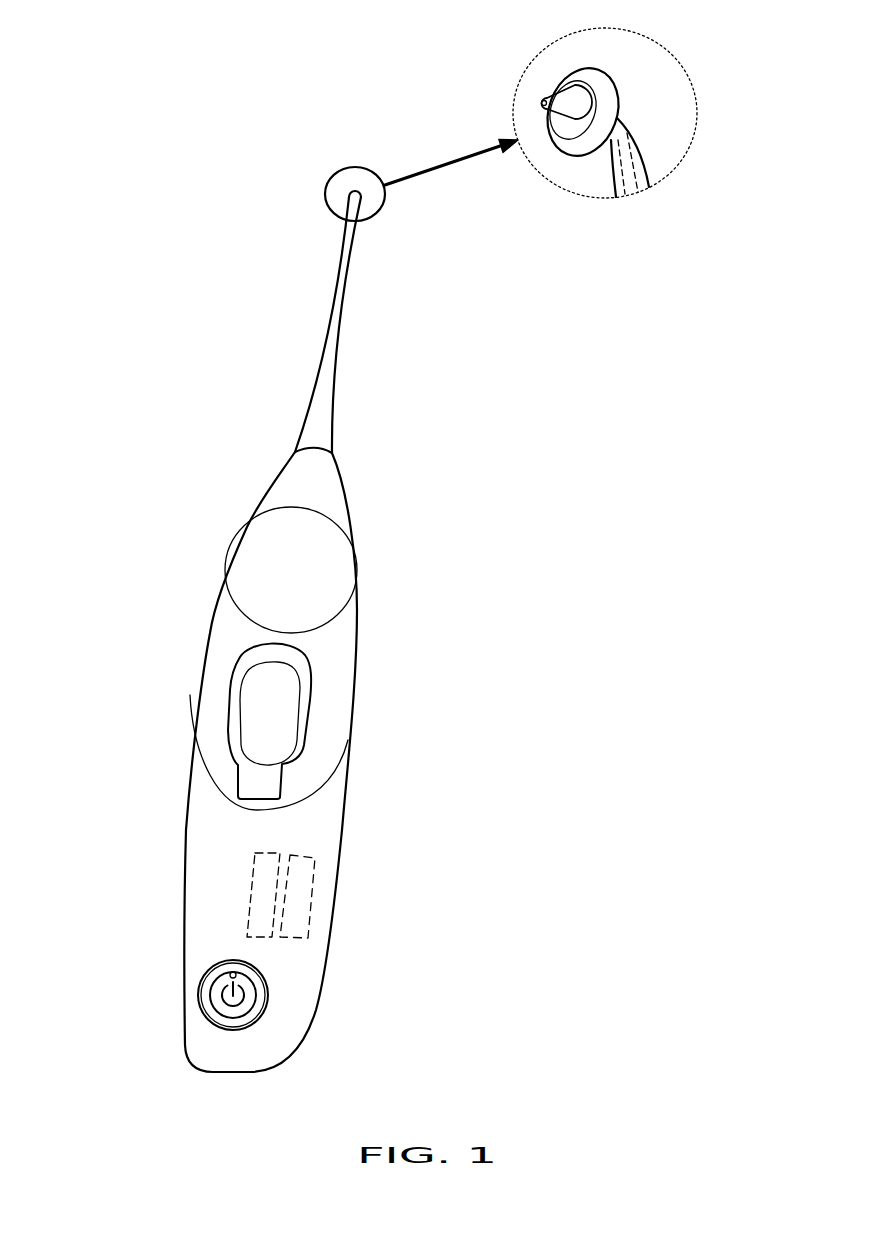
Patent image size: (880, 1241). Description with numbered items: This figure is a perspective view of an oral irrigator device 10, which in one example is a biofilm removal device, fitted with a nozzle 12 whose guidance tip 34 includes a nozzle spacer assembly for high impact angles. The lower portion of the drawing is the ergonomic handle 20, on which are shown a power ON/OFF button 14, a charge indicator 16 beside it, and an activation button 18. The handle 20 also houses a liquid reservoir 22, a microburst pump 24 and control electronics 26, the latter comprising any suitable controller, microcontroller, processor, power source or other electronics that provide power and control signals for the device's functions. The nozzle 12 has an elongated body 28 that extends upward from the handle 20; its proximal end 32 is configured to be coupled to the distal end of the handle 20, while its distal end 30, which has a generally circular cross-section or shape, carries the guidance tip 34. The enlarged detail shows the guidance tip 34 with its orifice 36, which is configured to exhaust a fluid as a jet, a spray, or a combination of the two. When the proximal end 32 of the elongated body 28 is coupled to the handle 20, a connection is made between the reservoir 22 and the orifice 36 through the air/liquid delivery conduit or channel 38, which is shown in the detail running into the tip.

The oral irrigator device 10 is at (116, 222).
The nozzle 12 is at (304, 348).
The power ON/OFF button 14 is at (213, 998).
The charge indicator 16 is at (233, 971).
The activation button 18 is at (243, 557).
The ergonomic handle 20 is at (218, 872).
The liquid reservoir 22 is at (250, 708).
The microburst pump 24 is at (295, 927).
The control electronics 26 is at (265, 873).
The elongated body 28 is at (322, 403).
The distal end 30 is at (325, 196).
The proximal end 32 is at (346, 452).
The guidance tip 34 is at (575, 88).
The orifice 36 is at (541, 103).
The air/liquid delivery conduit or channel 38 is at (630, 172).